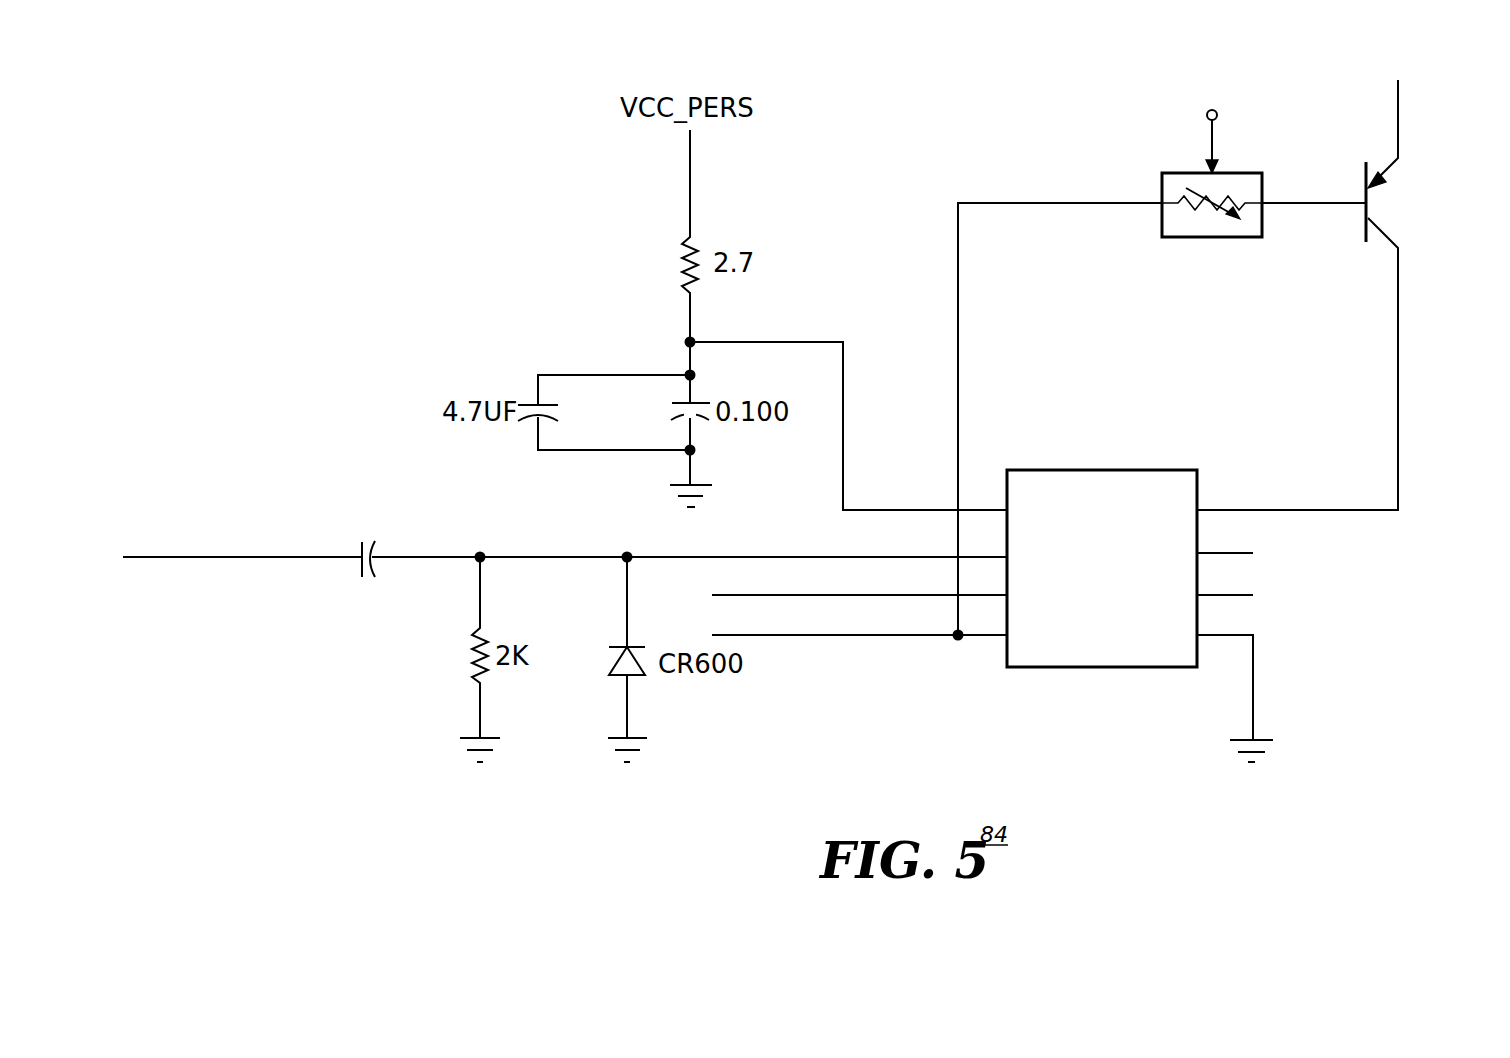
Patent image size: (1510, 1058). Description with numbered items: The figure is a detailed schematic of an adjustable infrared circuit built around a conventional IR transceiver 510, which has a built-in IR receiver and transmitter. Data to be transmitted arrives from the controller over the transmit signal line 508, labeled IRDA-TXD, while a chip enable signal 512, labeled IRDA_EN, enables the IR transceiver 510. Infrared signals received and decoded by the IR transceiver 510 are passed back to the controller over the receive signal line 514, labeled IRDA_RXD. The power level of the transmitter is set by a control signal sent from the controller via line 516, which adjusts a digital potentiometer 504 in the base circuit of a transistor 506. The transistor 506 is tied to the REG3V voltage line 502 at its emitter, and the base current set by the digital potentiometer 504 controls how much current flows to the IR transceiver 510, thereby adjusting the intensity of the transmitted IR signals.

The REG3V voltage line 502 is at (1337, 279).
The digital potentiometer 504 is at (1177, 172).
The transistor 506 is at (1375, 203).
The transmit signal line 508 is at (190, 515).
The IR transceiver 510 is at (1100, 667).
The chip enable signal 512 is at (905, 637).
The receive signal line 514 is at (916, 594).
The control signal line 516 is at (1214, 129).